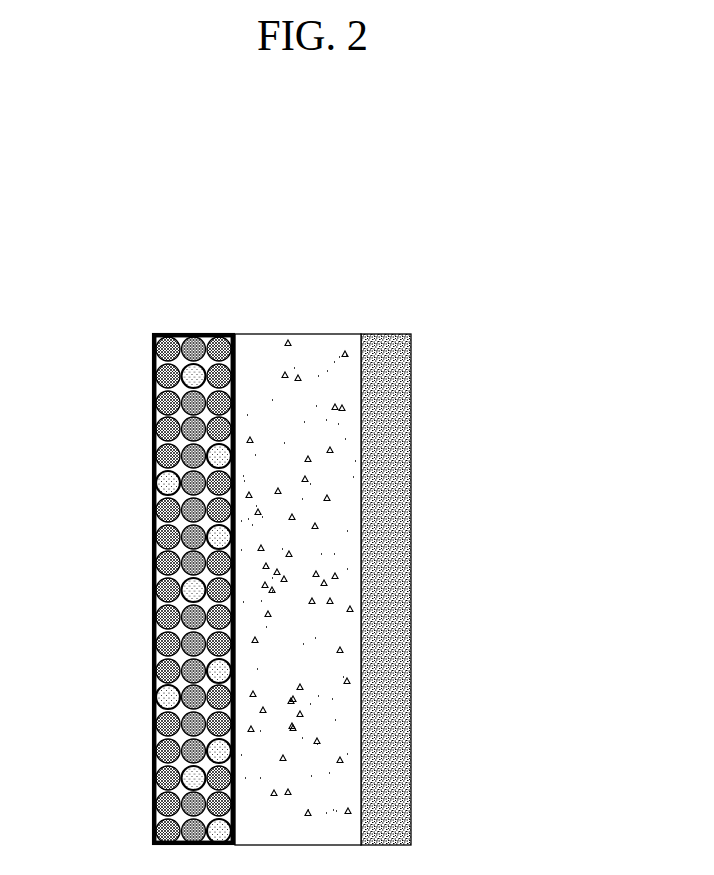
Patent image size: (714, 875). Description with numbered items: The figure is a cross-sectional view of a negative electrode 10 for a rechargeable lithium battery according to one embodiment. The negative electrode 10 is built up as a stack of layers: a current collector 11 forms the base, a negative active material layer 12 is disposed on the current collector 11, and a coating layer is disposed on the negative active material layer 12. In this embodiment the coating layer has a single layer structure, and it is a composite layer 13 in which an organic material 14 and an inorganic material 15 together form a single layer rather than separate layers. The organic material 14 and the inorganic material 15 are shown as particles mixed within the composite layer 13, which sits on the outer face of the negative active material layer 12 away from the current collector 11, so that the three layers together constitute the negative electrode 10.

The negative electrode 10 is at (350, 228).
The current collector 11 is at (386, 333).
The negative active material layer 12 is at (296, 333).
The composite layer 13 is at (174, 333).
The organic material 14 is at (213, 750).
The inorganic material 15 is at (168, 615).